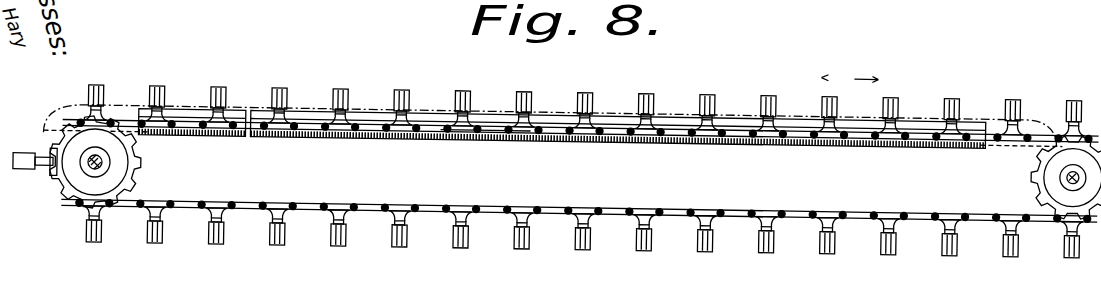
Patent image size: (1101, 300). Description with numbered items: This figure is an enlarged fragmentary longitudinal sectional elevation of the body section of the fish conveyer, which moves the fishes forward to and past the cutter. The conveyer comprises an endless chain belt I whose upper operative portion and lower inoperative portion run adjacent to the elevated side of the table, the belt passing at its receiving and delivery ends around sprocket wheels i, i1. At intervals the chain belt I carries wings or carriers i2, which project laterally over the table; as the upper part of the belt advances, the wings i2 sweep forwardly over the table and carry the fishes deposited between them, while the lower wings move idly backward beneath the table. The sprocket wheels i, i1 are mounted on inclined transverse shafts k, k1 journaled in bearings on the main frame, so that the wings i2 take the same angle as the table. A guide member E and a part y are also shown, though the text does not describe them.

The carriers, blades or wings i2 is at (274, 94).
The endless chain belt I is at (430, 121).
The guide rail E is at (726, 106).
The chain y is at (483, 136).
The sprocket wheel i1 is at (116, 156).
The transverse shaft k1 is at (88, 172).
The sprocket wheel i is at (1040, 146).
The transverse shaft k is at (1062, 168).